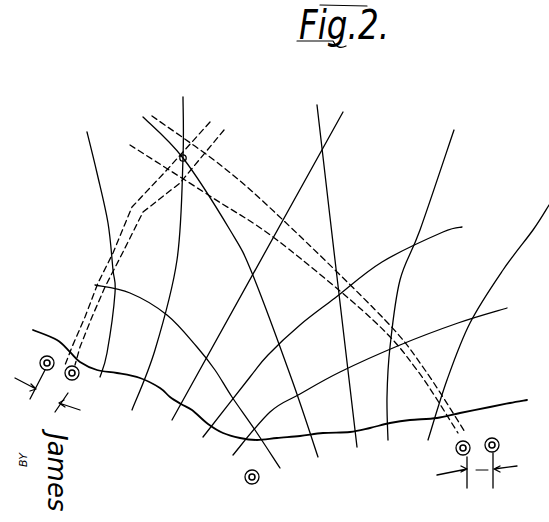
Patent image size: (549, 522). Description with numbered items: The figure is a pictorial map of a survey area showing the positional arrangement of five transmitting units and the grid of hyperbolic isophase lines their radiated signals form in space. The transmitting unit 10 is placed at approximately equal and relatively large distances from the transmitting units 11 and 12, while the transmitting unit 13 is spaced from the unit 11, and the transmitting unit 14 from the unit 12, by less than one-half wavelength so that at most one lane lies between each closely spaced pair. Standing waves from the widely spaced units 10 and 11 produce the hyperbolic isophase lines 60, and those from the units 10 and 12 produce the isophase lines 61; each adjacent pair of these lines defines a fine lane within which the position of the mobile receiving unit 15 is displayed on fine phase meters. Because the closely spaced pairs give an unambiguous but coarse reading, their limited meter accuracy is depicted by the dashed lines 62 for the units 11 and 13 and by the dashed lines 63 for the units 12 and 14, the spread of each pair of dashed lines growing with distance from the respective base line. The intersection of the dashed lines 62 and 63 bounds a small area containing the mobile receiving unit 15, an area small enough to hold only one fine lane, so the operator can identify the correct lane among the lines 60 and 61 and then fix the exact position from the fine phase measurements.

The transmitting unit 10 is at (263, 492).
The transmitting unit 11 is at (70, 389).
The transmitting unit 12 is at (454, 464).
The transmitting unit 13 is at (28, 370).
The transmitting unit 14 is at (504, 452).
The mobile receiving unit 15 is at (187, 158).
The hyperbolic isophase lines 60 is at (183, 99).
The isophase lines 61 is at (435, 186).
The dashed lines 62 is at (152, 199).
The dashed lines 63 is at (237, 207).